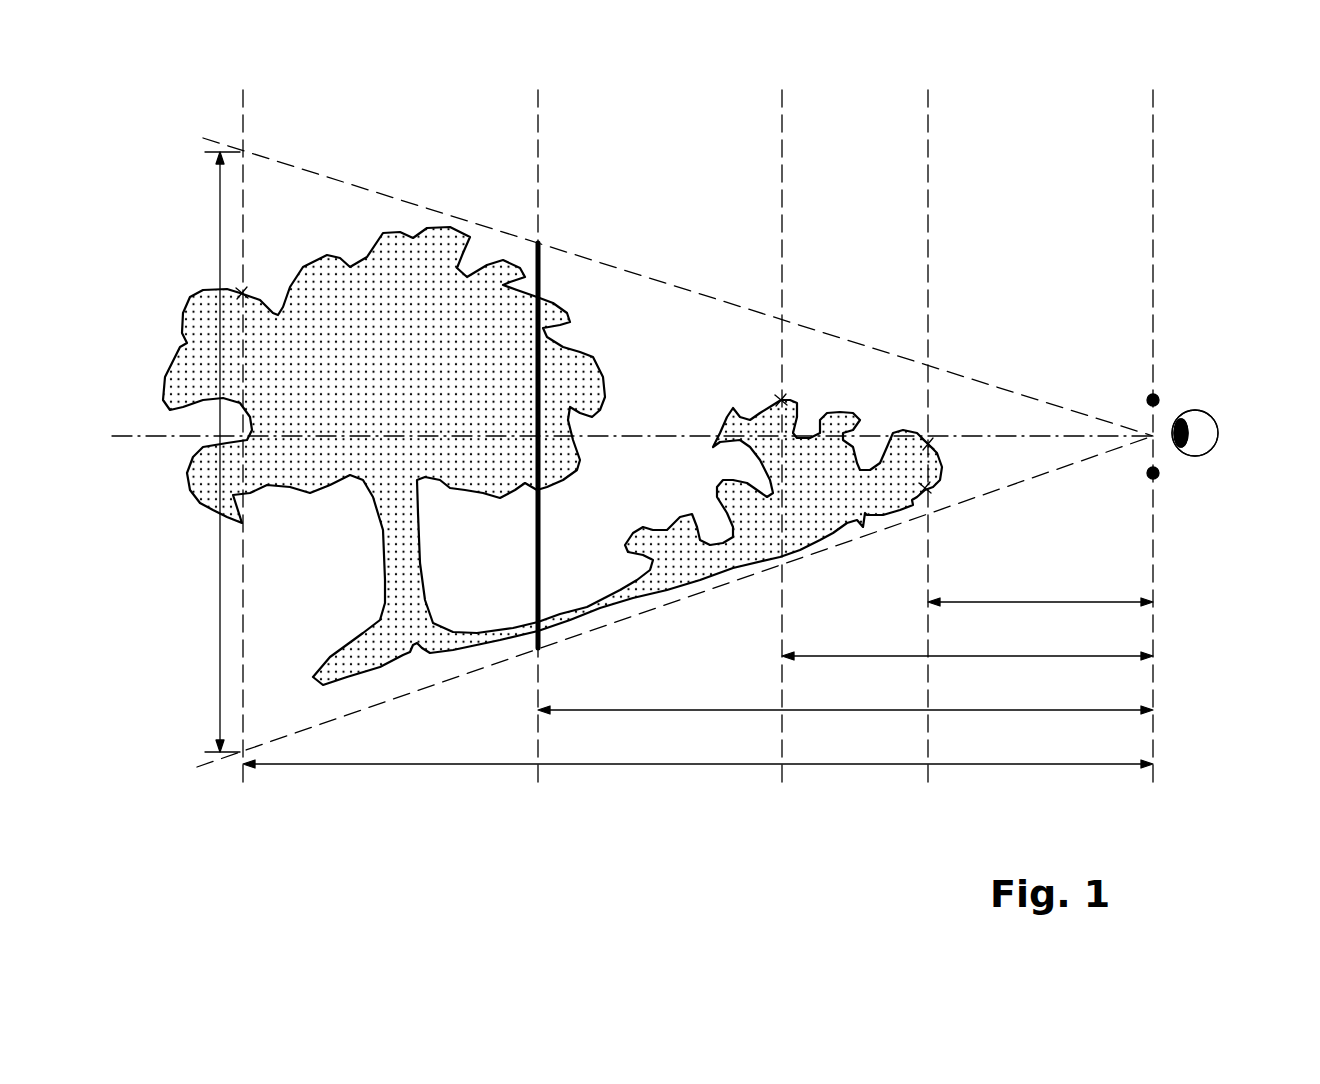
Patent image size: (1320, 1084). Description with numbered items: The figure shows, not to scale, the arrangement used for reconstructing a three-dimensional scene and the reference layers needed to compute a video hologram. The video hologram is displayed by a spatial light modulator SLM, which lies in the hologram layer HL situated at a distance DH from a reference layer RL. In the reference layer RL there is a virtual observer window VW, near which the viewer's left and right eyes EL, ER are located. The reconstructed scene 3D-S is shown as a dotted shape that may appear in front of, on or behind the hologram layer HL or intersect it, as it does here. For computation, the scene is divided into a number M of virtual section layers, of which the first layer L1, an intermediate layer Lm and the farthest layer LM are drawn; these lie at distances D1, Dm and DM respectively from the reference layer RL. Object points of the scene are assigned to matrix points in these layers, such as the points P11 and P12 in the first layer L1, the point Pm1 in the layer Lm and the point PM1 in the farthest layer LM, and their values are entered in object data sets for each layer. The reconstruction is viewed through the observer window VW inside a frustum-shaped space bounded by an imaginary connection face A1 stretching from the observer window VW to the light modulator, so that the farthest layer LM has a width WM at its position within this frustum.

The imaginary connection face A1 is at (678, 286).
The reconstructed three-dimensional scene 3D-S is at (392, 260).
The spatial light modulator SLM is at (540, 272).
The observer window VW is at (1153, 420).
The left eye of the viewer EL is at (1200, 450).
The right eye of the viewer ER is at (1195, 433).
The matrix point PM1 is at (259, 274).
The matrix point Pm1 is at (757, 381).
The matrix point P11 is at (952, 424).
The matrix point P12 is at (955, 477).
The width of section layer LM WM is at (203, 452).
The distance of section layer L1 to the reference layer D1 is at (1040, 586).
The distance of section layer Lm to the reference layer Dm is at (967, 640).
The distance of hologram layer to the reference layer DH is at (845, 693).
The distance of section layer LM to the reference layer DM is at (698, 748).
The section layer LM is at (225, 458).
The hologram layer HL is at (555, 456).
The section layer Lm is at (786, 458).
The section layer L1 is at (933, 458).
The reference layer RL is at (1171, 456).